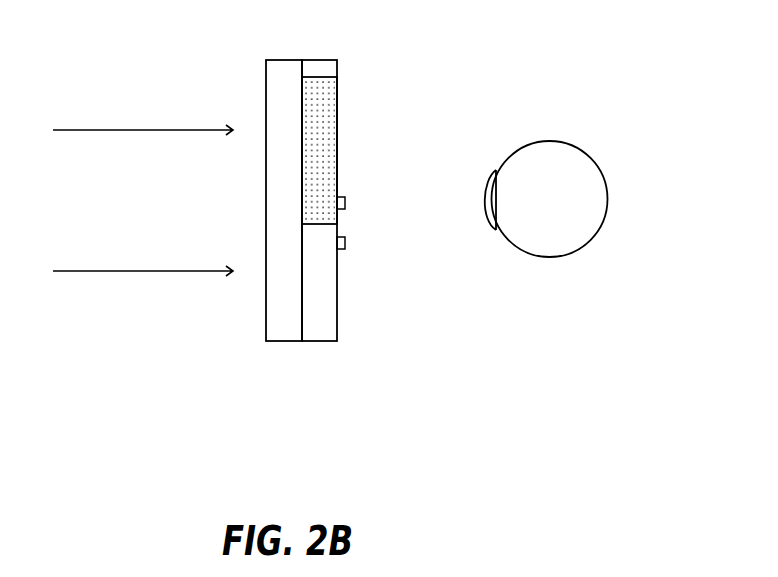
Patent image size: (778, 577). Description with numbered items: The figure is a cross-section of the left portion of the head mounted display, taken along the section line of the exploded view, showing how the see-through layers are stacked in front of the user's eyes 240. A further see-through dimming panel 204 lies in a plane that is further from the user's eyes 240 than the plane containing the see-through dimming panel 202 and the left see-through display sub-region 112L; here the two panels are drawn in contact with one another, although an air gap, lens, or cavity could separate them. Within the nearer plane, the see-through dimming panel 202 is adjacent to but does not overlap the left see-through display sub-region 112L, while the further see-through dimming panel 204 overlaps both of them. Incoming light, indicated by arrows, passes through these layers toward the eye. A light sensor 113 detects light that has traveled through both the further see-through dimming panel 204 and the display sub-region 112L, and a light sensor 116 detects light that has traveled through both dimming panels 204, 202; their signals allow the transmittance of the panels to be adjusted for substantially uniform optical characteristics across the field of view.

The further see-through dimming panel 204 is at (286, 70).
The see-through dimming panel 202 is at (318, 329).
The left see-through display sub-region 112L is at (328, 107).
The light sensor 113 is at (345, 203).
The light sensor 116 is at (345, 246).
The user's eyes 240 is at (547, 155).